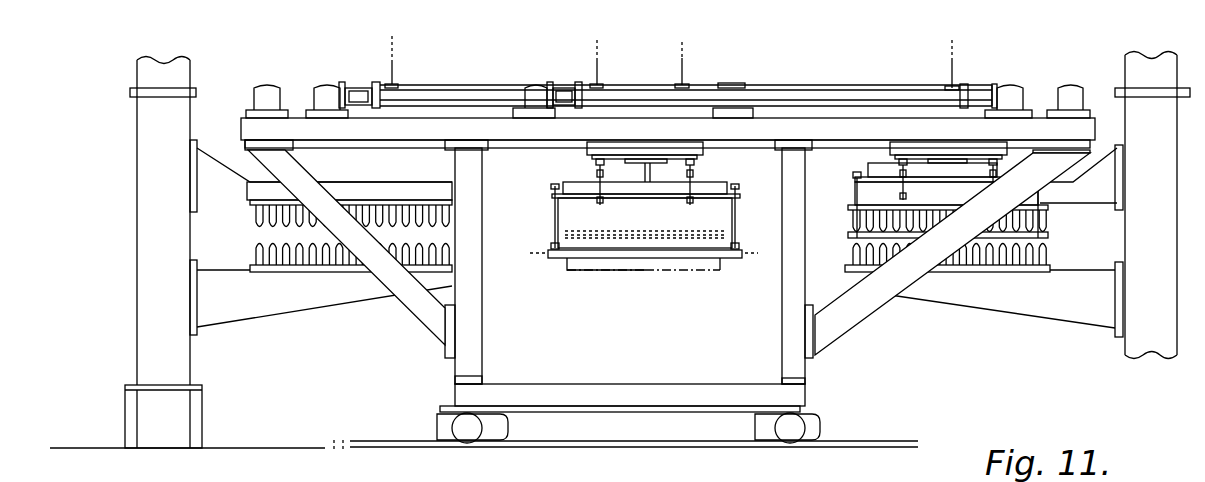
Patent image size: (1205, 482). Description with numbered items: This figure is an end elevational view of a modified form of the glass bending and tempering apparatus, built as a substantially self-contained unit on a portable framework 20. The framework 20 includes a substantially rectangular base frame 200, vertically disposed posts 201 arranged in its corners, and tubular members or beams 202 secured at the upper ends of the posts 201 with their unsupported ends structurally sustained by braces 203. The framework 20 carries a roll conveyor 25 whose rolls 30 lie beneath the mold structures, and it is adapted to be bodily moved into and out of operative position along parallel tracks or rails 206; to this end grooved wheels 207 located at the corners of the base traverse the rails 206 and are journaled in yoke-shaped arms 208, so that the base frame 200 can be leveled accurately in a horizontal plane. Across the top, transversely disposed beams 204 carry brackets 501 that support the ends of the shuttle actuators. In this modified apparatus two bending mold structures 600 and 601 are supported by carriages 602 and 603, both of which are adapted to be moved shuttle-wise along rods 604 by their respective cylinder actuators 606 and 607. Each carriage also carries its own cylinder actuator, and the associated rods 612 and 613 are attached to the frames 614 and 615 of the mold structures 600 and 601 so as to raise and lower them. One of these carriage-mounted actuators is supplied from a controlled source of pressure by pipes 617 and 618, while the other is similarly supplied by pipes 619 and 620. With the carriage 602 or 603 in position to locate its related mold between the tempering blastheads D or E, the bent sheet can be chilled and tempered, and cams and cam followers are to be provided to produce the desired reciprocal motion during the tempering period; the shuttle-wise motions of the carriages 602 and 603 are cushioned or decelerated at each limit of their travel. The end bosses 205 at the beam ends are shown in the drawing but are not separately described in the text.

The framework 20 is at (910, 412).
The roll conveyor 25 is at (654, 277).
The rolls 30 is at (697, 281).
The base frame 200 is at (699, 374).
The posts 201 is at (468, 348).
The tubular members or beams 202 is at (670, 127).
The braces 203 is at (405, 312).
The transversely disposed beams 204 is at (332, 93).
The end bosses 205 is at (266, 87).
The tracks or rails 206 is at (395, 442).
The grooved wheels 207 is at (480, 441).
The yoke-shaped arms 208 is at (500, 418).
The brackets 501 is at (360, 84).
The bending mold structure 600 is at (552, 274).
The bending mold structure 601 is at (1052, 238).
The carriage 602 is at (580, 158).
The carriage 603 is at (882, 157).
The rods 604 is at (362, 148).
The cylinder actuator 606 is at (478, 93).
The cylinder actuator 607 is at (848, 98).
The rod 612 is at (645, 170).
The rod 613 is at (950, 158).
The frame 614 is at (713, 187).
The frame 615 is at (918, 163).
The pipe 617 is at (394, 63).
The pipe 618 is at (686, 73).
The pipe 619 is at (600, 63).
The pipe 620 is at (950, 72).
The tempering blastheads D is at (297, 321).
The blastheads E is at (1013, 326).